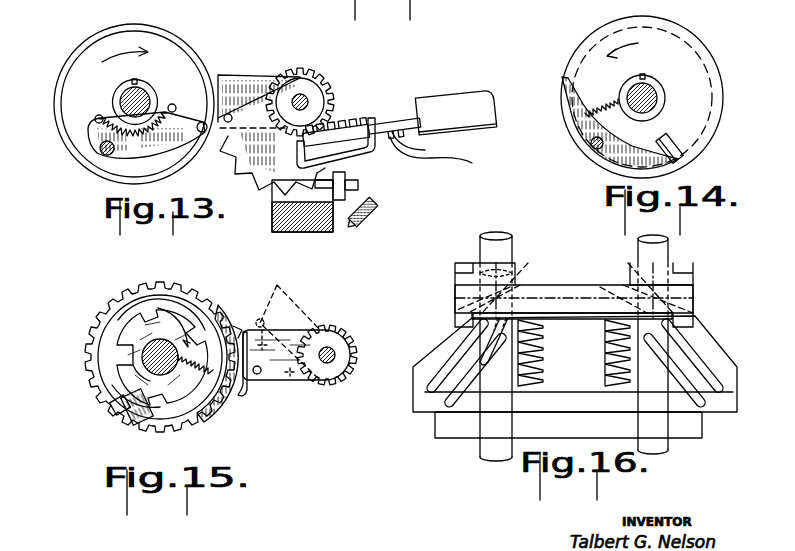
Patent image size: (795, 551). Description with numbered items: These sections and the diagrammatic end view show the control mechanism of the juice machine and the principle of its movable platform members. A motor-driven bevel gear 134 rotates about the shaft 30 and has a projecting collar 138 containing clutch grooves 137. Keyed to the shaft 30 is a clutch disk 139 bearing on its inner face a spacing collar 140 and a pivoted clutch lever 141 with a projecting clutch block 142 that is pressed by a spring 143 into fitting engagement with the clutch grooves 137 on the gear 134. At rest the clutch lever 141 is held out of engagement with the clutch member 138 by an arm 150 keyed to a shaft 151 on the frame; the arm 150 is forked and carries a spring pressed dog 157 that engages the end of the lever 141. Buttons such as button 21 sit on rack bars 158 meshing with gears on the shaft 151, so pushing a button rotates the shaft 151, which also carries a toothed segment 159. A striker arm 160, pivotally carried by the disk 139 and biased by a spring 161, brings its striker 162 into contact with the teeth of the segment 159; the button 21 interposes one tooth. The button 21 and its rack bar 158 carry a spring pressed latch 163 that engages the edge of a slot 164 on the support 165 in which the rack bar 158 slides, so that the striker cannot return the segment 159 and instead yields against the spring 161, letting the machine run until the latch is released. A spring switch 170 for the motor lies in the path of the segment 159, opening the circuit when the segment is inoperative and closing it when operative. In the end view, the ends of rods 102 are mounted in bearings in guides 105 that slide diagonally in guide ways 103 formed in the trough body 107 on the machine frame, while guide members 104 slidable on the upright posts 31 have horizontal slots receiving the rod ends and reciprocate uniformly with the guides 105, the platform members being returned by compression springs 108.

In FIG. 13, the clutch disk 139 is at (152, 40).
In FIG. 13, the spring 161 is at (163, 110).
In FIG. 13, the striker 162 is at (204, 122).
In FIG. 13, the shaft 30 is at (120, 100).
In FIG. 15, the shaft 30 is at (150, 360).
In FIG. 13, the striker arm 160 is at (133, 147).
In FIG. 13, the shaft 151 is at (301, 98).
In FIG. 15, the shaft 151 is at (330, 353).
In FIG. 13, the rack bar 158 is at (378, 122).
In FIG. 13, the button 21 is at (460, 98).
In FIG. 13, the toothed segment 159 is at (276, 156).
In FIG. 13, the slot 164 is at (370, 152).
In FIG. 13, the spring pressed latch 163 is at (415, 150).
In FIG. 13, the support 165 is at (348, 178).
In FIG. 13, the spring switch 170 is at (335, 205).
In FIG. 14, the spacing collar 140 is at (655, 88).
In FIG. 15, the spacing collar 140 is at (158, 330).
In FIG. 14, the clutch block 142 is at (673, 137).
In FIG. 15, the clutch block 142 is at (112, 408).
In FIG. 14, the spring 143 is at (600, 110).
In FIG. 15, the spring 143 is at (216, 335).
In FIG. 14, the clutch lever 141 is at (605, 165).
In FIG. 15, the clutch lever 141 is at (140, 420).
In FIG. 15, the bevel gear 134 is at (175, 283).
In FIG. 15, the clutch grooves 137 is at (140, 317).
In FIG. 15, the projecting collar 138 is at (130, 335).
In FIG. 15, the spring pressed dog 157 is at (236, 390).
In FIG. 15, the arm 150 is at (290, 380).
In FIG. 16, the upright posts 31 is at (500, 245).
In FIG. 16, the rods 102 is at (520, 285).
In FIG. 16, the guide members 104 is at (566, 288).
In FIG. 16, the guide ways 103 is at (470, 358).
In FIG. 16, the base 107 is at (420, 377).
In FIG. 16, the compression springs 108 is at (545, 350).
In FIG. 16, the guides 105 is at (505, 360).